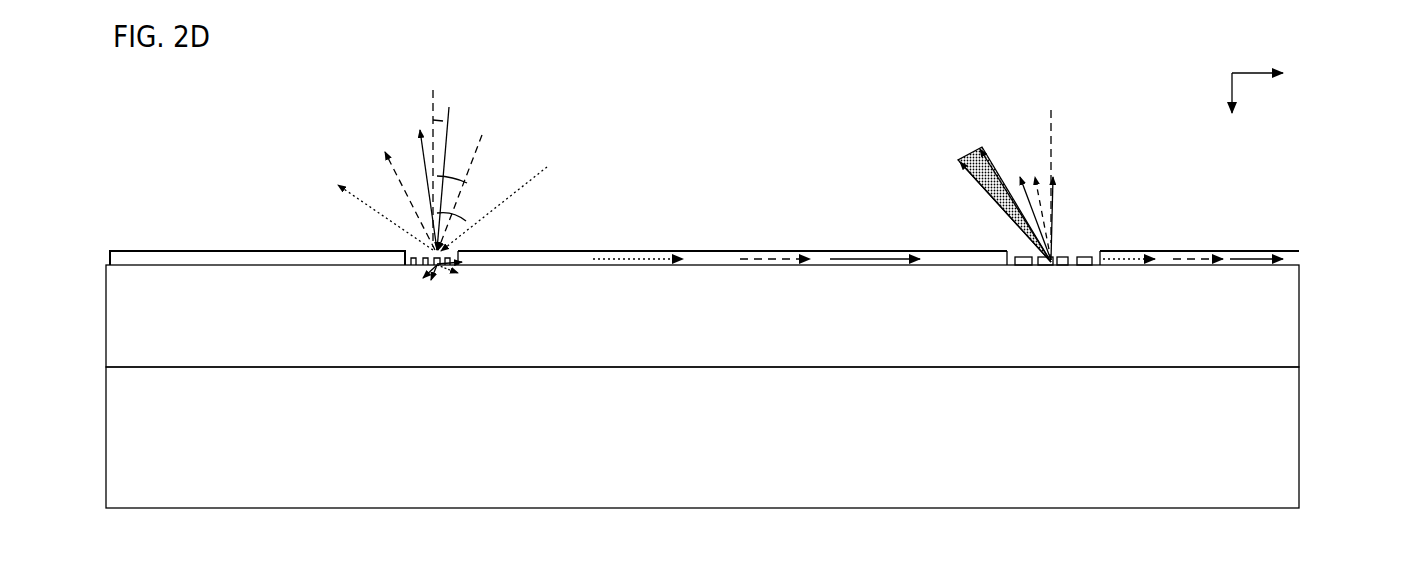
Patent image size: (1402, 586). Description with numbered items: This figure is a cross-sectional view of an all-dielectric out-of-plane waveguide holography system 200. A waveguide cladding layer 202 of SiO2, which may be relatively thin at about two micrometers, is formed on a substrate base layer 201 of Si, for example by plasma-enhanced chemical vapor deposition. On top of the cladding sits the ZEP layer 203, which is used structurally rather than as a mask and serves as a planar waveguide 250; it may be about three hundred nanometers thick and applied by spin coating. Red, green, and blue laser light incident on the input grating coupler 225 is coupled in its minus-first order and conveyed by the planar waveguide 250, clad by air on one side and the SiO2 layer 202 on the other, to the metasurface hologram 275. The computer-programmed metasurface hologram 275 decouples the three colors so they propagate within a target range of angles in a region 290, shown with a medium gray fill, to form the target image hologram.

The out-of-plane waveguide holography system 200 is at (98, 162).
The substrate base layer 201 is at (1300, 437).
The waveguide cladding layer 202 is at (1300, 310).
The ZEP layer 203 is at (1300, 253).
The input grating coupler 225 is at (577, 118).
The planar waveguide 250 is at (712, 200).
The metasurface hologram 275 is at (858, 122).
The region 290 is at (958, 164).